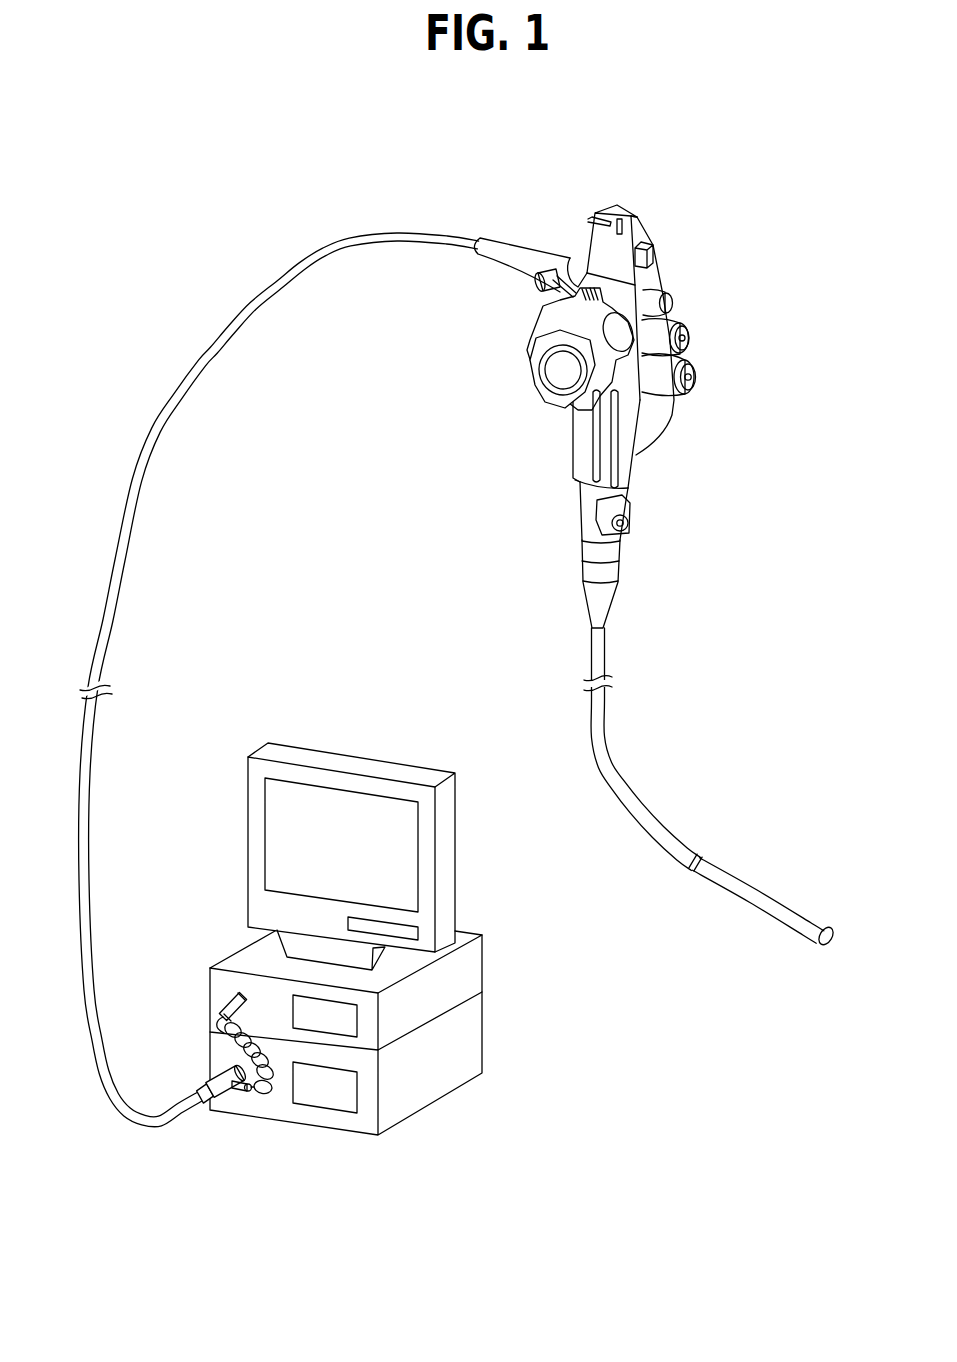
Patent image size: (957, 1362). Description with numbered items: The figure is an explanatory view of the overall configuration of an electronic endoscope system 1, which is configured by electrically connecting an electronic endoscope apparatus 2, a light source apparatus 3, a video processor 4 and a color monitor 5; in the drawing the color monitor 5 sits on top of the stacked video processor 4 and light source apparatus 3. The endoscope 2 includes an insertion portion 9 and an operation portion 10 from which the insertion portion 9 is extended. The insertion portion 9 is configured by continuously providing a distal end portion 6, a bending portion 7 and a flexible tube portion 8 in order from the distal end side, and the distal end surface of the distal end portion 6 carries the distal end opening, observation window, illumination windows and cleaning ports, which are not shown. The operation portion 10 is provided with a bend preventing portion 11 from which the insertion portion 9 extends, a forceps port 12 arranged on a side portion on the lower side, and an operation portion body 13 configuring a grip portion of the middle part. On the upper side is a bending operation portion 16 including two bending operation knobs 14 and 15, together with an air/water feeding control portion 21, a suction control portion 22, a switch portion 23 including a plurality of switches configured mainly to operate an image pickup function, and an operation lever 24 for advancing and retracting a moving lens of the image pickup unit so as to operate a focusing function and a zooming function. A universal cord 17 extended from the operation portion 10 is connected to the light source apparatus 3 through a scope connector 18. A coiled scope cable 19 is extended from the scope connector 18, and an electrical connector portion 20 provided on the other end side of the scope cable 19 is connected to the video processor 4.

The electronic endoscope system 1 is at (298, 174).
The electronic endoscope apparatus 2 is at (546, 512).
The light source apparatus 3 is at (417, 1082).
The video processor 4 is at (470, 968).
The color monitor 5 is at (447, 877).
The distal end portion 6 is at (818, 925).
The bending portion 7 is at (676, 880).
The flexible tube portion 8 is at (608, 715).
The insertion portion 9 is at (638, 626).
The operation portion 10 is at (556, 435).
The bend preventing portion 11 is at (608, 597).
The forceps port 12 is at (630, 527).
The operation portion body 13 is at (628, 452).
The bending operation knob 14 is at (538, 298).
The bending operation knob 15 is at (537, 357).
The bending operation portion 16 is at (423, 318).
The universal cord 17 is at (197, 358).
The scope connector 18 is at (210, 1100).
The scope cable 19 is at (227, 1050).
The electrical connector portion 20 is at (223, 1005).
The air/water feeding control portion 21 is at (694, 382).
The suction control portion 22 is at (690, 345).
The switch portion 23 is at (653, 199).
The operation lever 24 is at (545, 270).